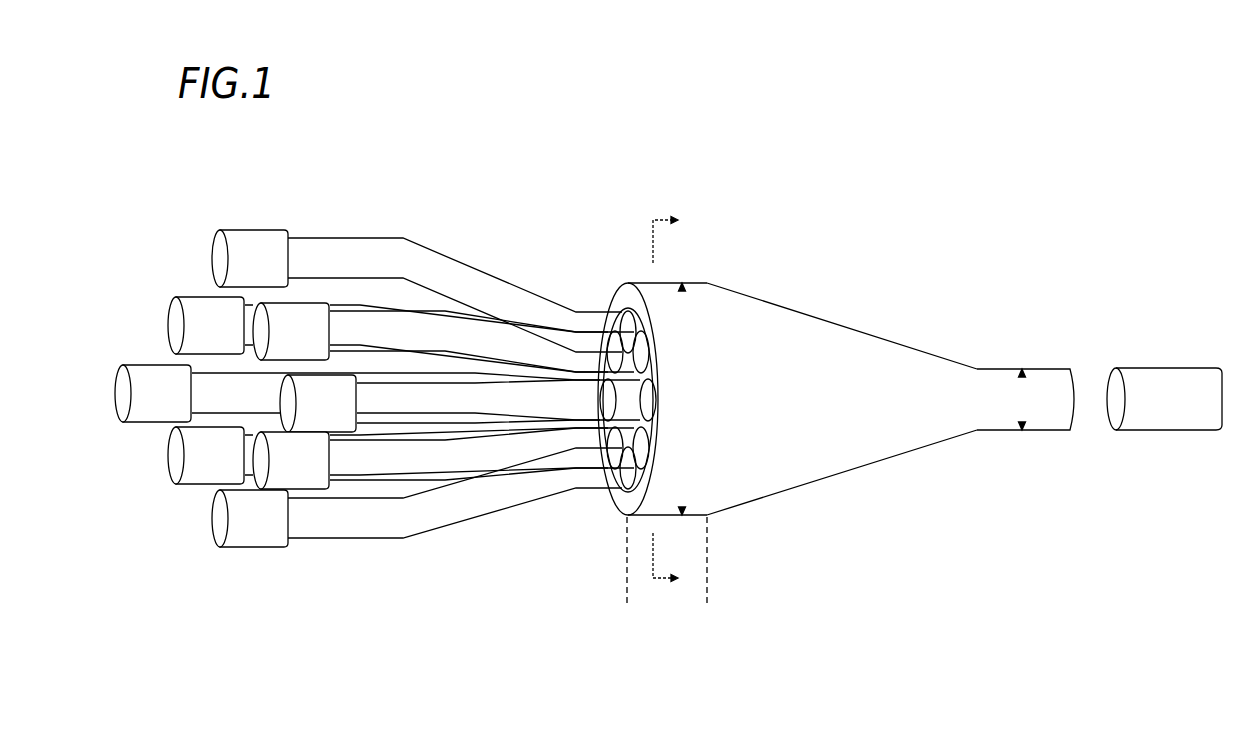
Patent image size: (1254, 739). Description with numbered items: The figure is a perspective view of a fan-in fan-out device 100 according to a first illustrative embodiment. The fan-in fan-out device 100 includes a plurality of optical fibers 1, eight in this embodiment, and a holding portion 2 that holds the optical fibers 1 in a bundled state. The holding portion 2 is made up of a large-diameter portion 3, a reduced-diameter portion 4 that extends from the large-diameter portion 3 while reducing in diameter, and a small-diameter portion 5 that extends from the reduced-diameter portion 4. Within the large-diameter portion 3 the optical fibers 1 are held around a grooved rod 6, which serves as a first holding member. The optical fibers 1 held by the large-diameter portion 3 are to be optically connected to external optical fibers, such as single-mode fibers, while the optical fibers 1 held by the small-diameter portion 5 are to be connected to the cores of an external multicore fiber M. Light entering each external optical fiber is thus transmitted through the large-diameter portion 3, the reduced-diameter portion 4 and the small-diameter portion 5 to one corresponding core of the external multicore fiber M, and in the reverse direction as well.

The optical fibers 1 is at (288, 576).
The holding portion 2 is at (811, 448).
The large-diameter portion 3 is at (627, 610).
The reduced-diameter portion 4 is at (977, 610).
The small-diameter portion 5 is at (1025, 509).
The grooved rod 6 is at (620, 412).
The fan-in fan-out device 100 is at (811, 448).
The external multicore fiber M is at (1163, 367).